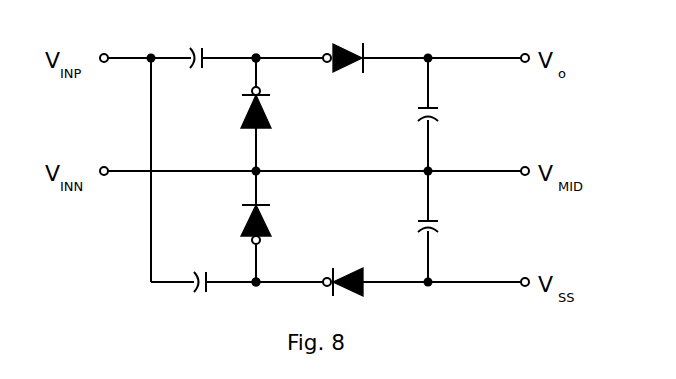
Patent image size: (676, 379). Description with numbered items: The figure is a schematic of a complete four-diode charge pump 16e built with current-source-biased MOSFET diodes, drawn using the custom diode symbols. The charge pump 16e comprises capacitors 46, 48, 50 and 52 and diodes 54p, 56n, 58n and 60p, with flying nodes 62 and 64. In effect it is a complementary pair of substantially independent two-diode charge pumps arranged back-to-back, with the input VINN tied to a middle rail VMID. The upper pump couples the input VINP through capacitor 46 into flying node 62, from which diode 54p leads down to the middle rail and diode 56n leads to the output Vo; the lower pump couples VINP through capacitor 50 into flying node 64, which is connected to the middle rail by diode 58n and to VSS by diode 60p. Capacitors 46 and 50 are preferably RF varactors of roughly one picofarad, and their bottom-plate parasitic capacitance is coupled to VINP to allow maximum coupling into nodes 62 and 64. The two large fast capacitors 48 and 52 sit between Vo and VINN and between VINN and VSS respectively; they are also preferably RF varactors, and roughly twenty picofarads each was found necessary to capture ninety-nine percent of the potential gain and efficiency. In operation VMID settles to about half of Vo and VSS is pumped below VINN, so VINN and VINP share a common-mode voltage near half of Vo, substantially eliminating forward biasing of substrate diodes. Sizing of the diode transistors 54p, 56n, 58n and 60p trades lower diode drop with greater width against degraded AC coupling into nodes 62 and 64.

The 4-diode charge pump 16e is at (251, 313).
The capacitor 46 is at (191, 72).
The capacitor 48 is at (416, 113).
The capacitor 50 is at (199, 272).
The capacitor 52 is at (416, 226).
The diode 54p is at (266, 112).
The diode 56n is at (347, 74).
The diode 58n is at (266, 221).
The diode 60p is at (346, 268).
The flying node 62 is at (259, 61).
The flying node 64 is at (253, 279).